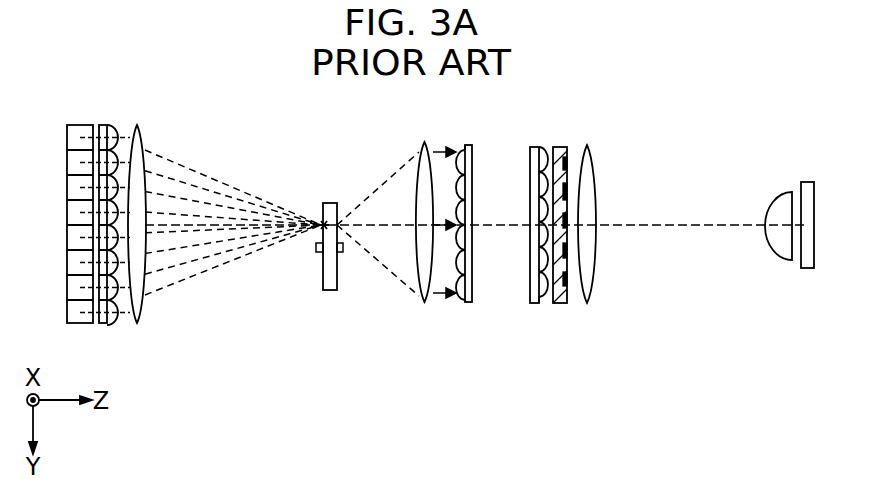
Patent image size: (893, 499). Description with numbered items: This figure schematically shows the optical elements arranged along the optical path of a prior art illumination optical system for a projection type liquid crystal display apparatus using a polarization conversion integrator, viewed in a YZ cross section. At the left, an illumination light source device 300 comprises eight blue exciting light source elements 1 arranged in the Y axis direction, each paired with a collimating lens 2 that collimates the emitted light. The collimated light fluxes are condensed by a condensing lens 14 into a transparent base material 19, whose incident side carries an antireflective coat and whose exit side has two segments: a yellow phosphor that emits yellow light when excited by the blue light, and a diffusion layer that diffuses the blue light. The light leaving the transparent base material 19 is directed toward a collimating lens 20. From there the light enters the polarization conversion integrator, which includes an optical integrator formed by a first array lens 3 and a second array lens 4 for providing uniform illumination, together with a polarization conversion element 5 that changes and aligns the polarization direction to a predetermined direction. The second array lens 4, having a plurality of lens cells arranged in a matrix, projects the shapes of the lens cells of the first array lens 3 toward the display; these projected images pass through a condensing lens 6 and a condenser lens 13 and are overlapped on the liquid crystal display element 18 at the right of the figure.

The illumination light source device 300 is at (62, 118).
The blue exciting light source elements 1 is at (80, 323).
The collimating lenses 2 is at (106, 323).
The condensing lens 14 is at (137, 323).
The transparent base material 19 is at (330, 290).
The collimating lens 20 is at (424, 302).
The first array lens 3 is at (468, 302).
The second array lens 4 is at (533, 303).
The polarization conversion element 5 is at (560, 303).
The condensing lens 6 is at (587, 303).
The condenser lens 13 is at (778, 258).
The liquid crystal display element 18 is at (807, 268).